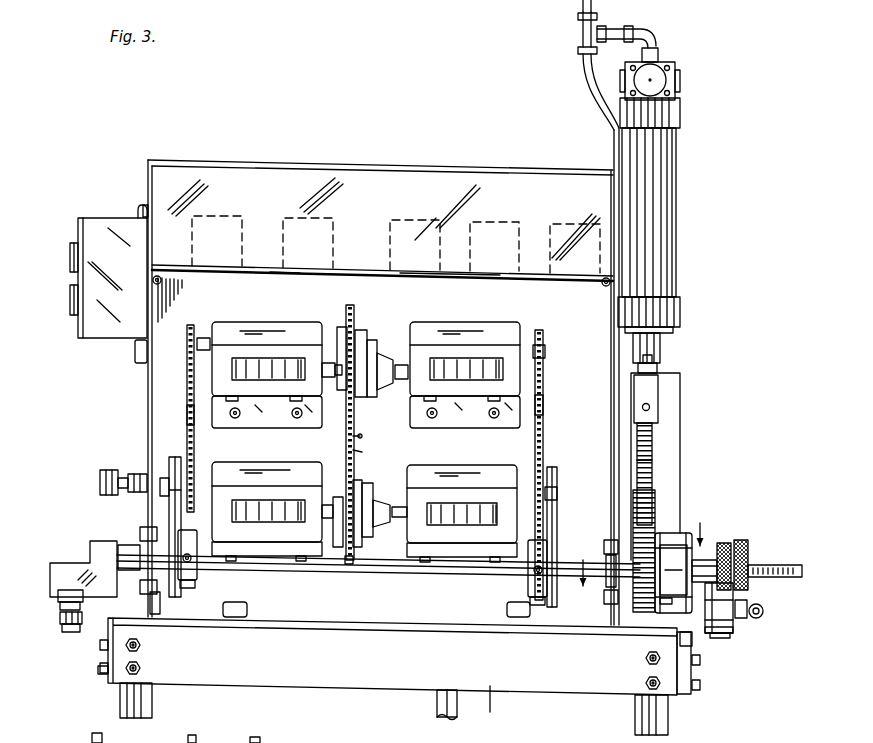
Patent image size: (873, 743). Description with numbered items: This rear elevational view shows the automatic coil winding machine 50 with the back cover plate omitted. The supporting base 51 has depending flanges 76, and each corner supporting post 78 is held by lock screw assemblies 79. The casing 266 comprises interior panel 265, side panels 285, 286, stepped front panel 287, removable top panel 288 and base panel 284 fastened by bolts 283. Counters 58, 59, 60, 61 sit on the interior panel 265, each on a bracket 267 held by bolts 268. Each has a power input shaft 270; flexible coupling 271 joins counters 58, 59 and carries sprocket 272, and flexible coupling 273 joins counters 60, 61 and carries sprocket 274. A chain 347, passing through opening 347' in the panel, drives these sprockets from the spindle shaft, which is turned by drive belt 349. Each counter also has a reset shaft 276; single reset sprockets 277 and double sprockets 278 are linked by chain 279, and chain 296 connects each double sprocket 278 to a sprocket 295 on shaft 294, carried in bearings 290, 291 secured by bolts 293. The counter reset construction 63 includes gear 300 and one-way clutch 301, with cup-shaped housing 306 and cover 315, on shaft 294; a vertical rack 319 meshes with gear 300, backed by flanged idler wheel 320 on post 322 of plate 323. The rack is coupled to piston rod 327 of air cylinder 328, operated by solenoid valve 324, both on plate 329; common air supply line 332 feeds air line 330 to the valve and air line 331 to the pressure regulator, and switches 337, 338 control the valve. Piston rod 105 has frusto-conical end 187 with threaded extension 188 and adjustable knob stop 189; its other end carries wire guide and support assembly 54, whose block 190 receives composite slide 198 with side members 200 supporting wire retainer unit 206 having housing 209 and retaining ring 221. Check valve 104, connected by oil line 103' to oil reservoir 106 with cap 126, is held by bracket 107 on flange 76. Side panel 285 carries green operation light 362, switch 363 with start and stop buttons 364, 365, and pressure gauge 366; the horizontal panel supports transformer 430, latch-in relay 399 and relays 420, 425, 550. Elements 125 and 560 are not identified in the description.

The counting apparatus 50 is at (352, 93).
The base plate 51 is at (105, 684).
The clamp assembly 54 is at (68, 552).
The counter 58 is at (278, 332).
The counter 59 is at (487, 335).
The counter 60 is at (293, 463).
The counter 61 is at (492, 468).
The drum 63 is at (672, 530).
The bracket 76 is at (692, 692).
The foot 78 is at (120, 703).
The bolt 79 is at (98, 666).
The bolt 103' is at (777, 615).
The washer 104 is at (732, 632).
The clamp block 105 is at (92, 543).
The nut 106 is at (728, 640).
The bracket 107 is at (693, 638).
The clamp pad 125 is at (117, 575).
The knurled knob 126 is at (724, 543).
The shaft 187 is at (734, 532).
The shaft 188 is at (786, 565).
The knurled knob 189 is at (745, 540).
The support bracket 190 is at (52, 562).
The nut 198 is at (60, 605).
The washer 200 is at (58, 591).
The screw 206 is at (56, 618).
The bolt 209 is at (98, 669).
The nut 221 is at (68, 629).
The rail 265 is at (655, 352).
The panel 266 is at (262, 159).
The mounting bracket 267 is at (267, 418).
The screw 268 is at (300, 400).
The hub 270 is at (399, 380).
The coupling 271 is at (372, 352).
The chain 272 is at (349, 318).
The sprocket 273 is at (370, 545).
The counter drive 274 is at (330, 488).
The sprocket 276 is at (186, 348).
The chain 277 is at (196, 330).
The sprocket wheel 278 is at (170, 497).
The chain 279 is at (186, 415).
The bearing block 283 is at (235, 617).
The shaft 284 is at (446, 622).
The frame 285 is at (147, 397).
The block 286 is at (660, 395).
The housing 287 is at (683, 386).
The plate 288 is at (447, 280).
The bracket 290 is at (160, 614).
The drum 291 is at (545, 592).
The collar 293 is at (140, 534).
The shaft 294 is at (352, 566).
The bearing 295 is at (188, 588).
The hub 296 is at (198, 540).
The gear 300 is at (640, 598).
The drum 301 is at (660, 525).
The screw 306 is at (660, 601).
The housing 315 is at (737, 604).
The rack 319 is at (654, 440).
The base 320 is at (218, 740).
The bolt 322 is at (130, 738).
The collar 323 is at (612, 605).
The valve 324 is at (662, 78).
The nut 327 is at (660, 368).
The cylinder 328 is at (660, 155).
The tube 329 is at (621, 202).
The pipe 330 is at (645, 30).
The pipe 331 is at (582, 80).
The pipe 332 is at (568, 6).
The nut 337 is at (652, 405).
The rack 338 is at (655, 468).
The link 347 is at (376, 463).
The link 347' is at (380, 438).
The bracket 349 is at (437, 710).
The bracket 362 is at (150, 208).
The box 363 is at (97, 223).
The terminal 364 is at (70, 256).
The terminal 365 is at (70, 303).
The bracket 366 is at (135, 352).
The switch 399 is at (218, 214).
The switch 420 is at (333, 220).
The switch 425 is at (417, 220).
The switch 430 is at (578, 226).
The switch 550 is at (478, 224).
The tab 560 is at (140, 204).